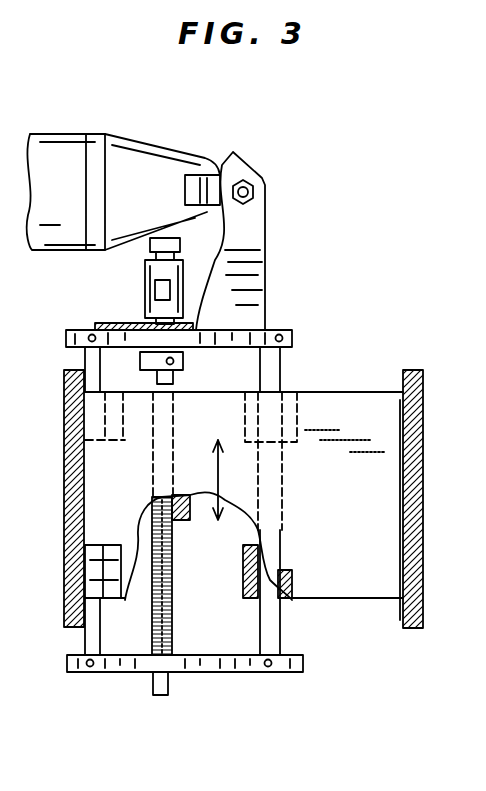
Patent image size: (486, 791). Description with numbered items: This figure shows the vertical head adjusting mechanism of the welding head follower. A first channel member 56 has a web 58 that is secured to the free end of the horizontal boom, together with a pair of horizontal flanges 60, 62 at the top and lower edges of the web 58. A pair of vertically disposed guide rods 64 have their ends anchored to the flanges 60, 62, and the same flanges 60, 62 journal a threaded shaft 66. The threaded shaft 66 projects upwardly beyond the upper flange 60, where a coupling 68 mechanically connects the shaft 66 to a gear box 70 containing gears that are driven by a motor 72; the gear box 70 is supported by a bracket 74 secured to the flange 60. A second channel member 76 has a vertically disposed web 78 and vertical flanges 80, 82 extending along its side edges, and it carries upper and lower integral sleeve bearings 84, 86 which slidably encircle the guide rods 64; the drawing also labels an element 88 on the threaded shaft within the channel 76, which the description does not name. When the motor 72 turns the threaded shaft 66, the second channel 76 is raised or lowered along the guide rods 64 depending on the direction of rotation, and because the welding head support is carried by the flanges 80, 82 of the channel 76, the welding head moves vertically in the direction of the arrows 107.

The first channel member 56 is at (54, 322).
The web 58 is at (212, 596).
The horizontal flange 60 is at (277, 330).
The horizontal flange 62 is at (225, 673).
The guide rods 64 is at (77, 645).
The threaded shaft 66 is at (168, 636).
The coupling 68 is at (144, 275).
The gear box 70 is at (155, 146).
The motor 72 is at (57, 133).
The bracket 74 is at (246, 280).
The second channel member 76 is at (357, 372).
The web 78 is at (367, 590).
The vertical flange 80 is at (65, 527).
The vertical flange 82 is at (424, 522).
The upper sleeve bearings 84 is at (118, 390).
The lower sleeve bearings 86 is at (105, 600).
The nut 88 is at (185, 521).
The arrows 107 is at (232, 480).